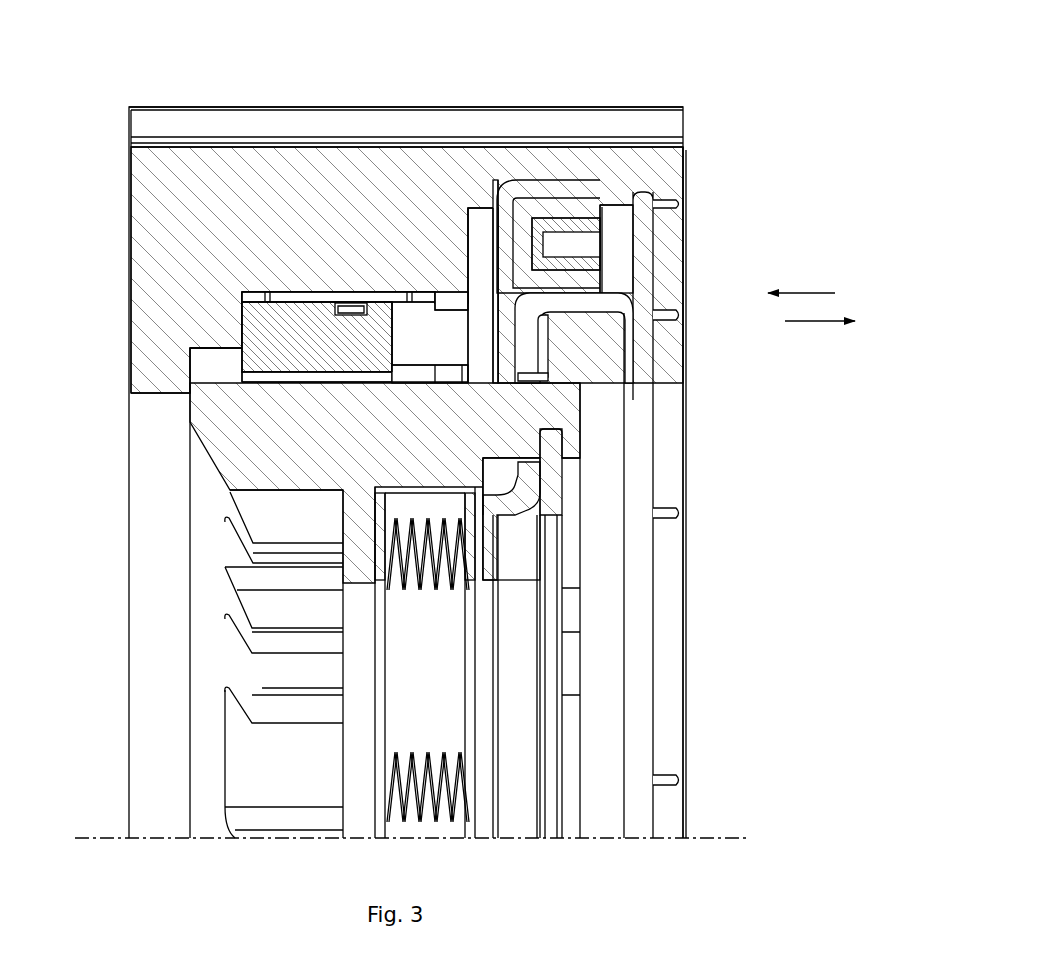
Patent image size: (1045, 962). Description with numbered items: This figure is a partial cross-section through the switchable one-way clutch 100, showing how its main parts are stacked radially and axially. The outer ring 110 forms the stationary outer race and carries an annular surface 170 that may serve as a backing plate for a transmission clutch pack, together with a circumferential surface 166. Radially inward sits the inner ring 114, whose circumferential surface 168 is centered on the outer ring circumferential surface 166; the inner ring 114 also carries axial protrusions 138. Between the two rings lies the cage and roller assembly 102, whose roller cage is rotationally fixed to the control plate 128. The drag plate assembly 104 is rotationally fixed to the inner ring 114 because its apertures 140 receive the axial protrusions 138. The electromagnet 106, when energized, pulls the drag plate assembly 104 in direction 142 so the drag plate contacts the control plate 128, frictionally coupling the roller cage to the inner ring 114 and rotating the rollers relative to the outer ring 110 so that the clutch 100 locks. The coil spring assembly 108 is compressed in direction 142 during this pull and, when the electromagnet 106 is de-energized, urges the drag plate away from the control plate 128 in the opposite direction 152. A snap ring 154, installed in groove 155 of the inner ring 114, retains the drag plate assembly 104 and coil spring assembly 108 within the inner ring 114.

The switchable one-way clutch 100 is at (170, 72).
The cage and roller assembly 102 is at (421, 302).
The drag plate assembly 104 is at (543, 328).
The electromagnet 106 is at (608, 204).
The coil spring assembly 108 is at (470, 543).
The outer ring 110 is at (672, 104).
The inner ring 114 is at (243, 465).
The control plate 128 is at (500, 310).
The axial protrusions 138 is at (585, 405).
The apertures 140 is at (543, 377).
The direction 142 is at (790, 292).
The direction 152 is at (813, 322).
The snap ring 154 is at (568, 473).
The groove 155 is at (561, 442).
The circumferential surface 166 is at (203, 354).
The circumferential surface 168 is at (212, 346).
The annular surface 170 is at (129, 224).